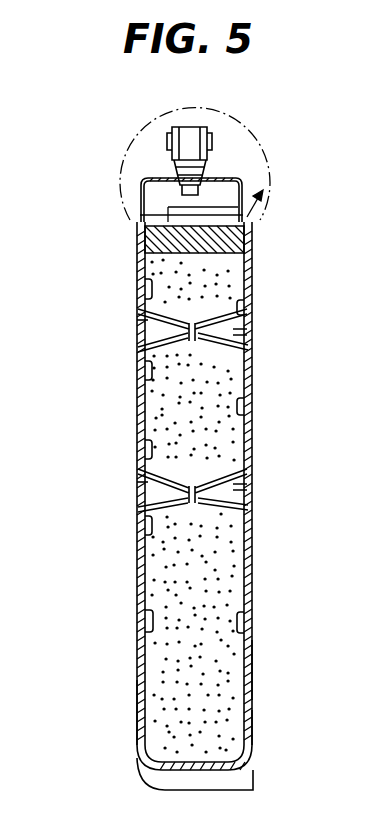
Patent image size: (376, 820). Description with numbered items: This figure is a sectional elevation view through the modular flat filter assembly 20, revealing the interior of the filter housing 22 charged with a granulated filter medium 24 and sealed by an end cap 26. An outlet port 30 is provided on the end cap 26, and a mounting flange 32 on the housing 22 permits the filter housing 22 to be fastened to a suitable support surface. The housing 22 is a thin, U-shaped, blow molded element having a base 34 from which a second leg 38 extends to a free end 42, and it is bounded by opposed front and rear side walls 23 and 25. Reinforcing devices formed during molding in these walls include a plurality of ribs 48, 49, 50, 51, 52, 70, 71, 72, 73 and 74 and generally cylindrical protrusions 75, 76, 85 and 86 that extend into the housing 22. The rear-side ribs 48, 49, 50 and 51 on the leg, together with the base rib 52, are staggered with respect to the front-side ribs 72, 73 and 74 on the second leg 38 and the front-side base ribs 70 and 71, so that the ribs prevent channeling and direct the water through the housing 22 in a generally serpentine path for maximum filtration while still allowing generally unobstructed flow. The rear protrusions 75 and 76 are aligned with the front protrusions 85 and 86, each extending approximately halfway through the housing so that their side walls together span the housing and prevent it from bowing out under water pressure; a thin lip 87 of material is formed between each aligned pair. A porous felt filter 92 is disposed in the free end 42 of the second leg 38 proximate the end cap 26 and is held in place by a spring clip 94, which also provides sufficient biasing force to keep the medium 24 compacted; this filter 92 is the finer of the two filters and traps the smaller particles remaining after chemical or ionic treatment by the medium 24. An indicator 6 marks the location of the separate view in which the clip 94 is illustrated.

The modular flat filter assembly 20 is at (70, 278).
The filter housing 22 is at (250, 553).
The front side wall 23 is at (137, 698).
The filter medium 24 is at (242, 697).
The rear side wall 25 is at (253, 657).
The end cap 26 is at (258, 147).
The outlet port 30 is at (222, 141).
The mounting flange 32 is at (253, 782).
The base 34 is at (253, 731).
The second leg 38 is at (252, 378).
The free end 42 is at (249, 227).
The rib 48 is at (238, 250).
The rib 49 is at (251, 338).
The rib 50 is at (245, 409).
The rib 51 is at (248, 487).
The rib 52 is at (245, 622).
The section view direction 6 is at (257, 183).
The rib 70 is at (137, 621).
The rib 71 is at (137, 531).
The rib 72 is at (137, 452).
The rib 73 is at (136, 371).
The rib 74 is at (136, 290).
The protrusion 75 is at (254, 340).
The protrusion 76 is at (240, 500).
The protrusion 85 is at (140, 482).
The protrusion 86 is at (137, 320).
The lip 87 is at (162, 336).
The porous filter 92 is at (136, 233).
The spring clip 94 is at (168, 207).